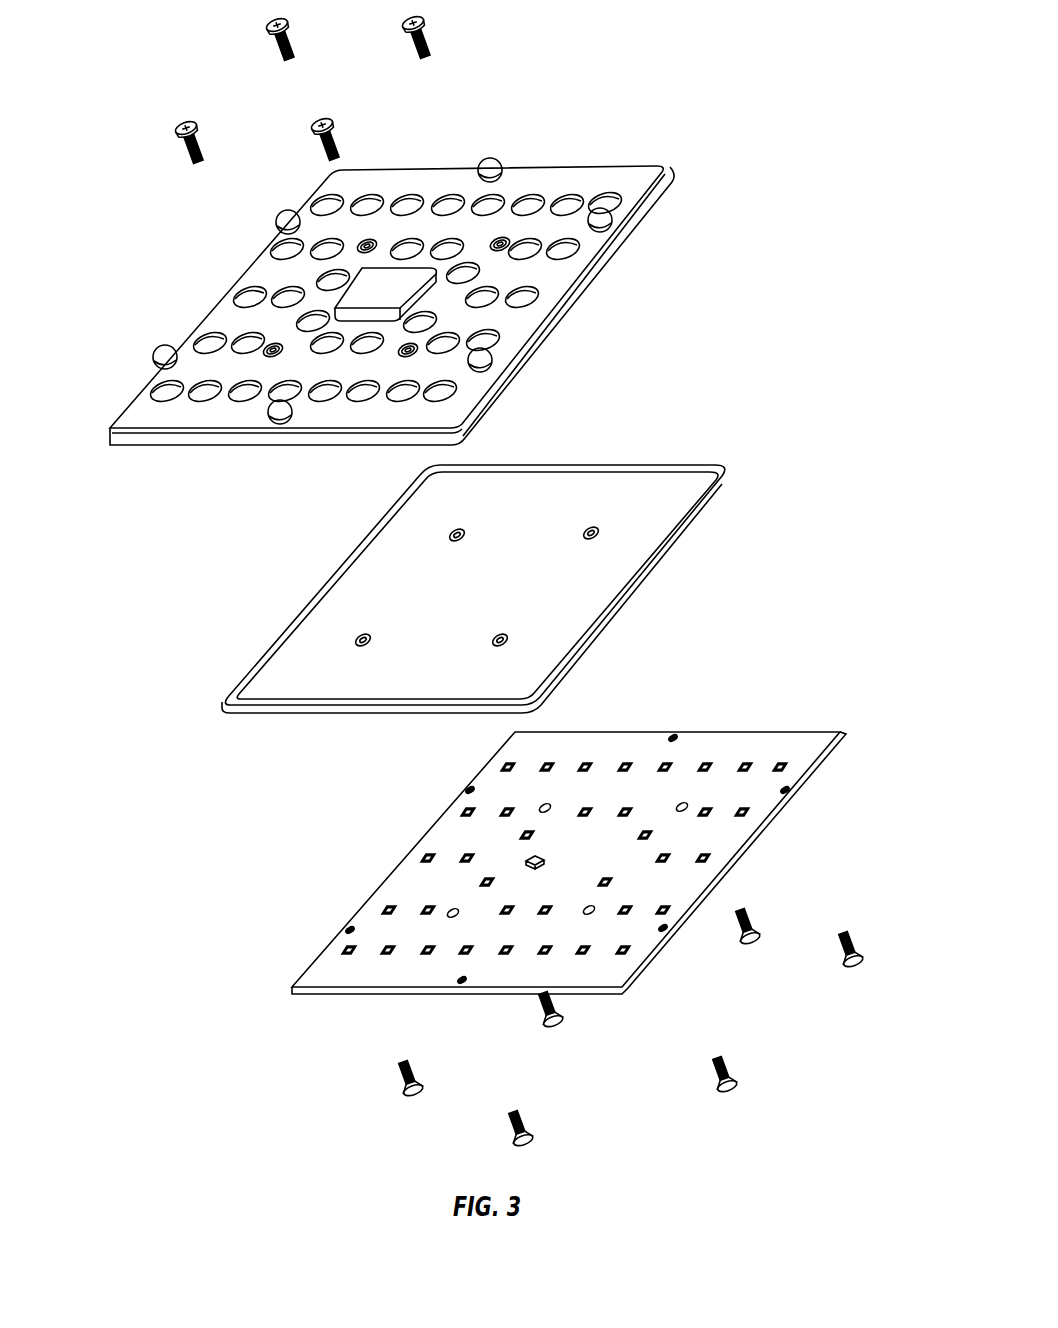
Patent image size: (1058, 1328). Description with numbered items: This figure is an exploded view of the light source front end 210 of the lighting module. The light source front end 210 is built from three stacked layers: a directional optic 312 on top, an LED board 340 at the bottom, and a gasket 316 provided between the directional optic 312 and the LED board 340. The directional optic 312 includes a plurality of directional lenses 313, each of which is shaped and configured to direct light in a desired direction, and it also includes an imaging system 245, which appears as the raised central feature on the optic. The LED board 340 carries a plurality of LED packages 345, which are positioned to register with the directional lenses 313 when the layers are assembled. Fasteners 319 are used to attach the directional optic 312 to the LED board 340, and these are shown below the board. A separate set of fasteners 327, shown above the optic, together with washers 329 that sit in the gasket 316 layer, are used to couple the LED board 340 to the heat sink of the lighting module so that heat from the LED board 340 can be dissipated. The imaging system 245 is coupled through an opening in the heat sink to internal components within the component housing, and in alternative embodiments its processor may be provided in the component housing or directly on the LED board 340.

The light source front end 210 is at (722, 198).
The imaging system 245 is at (376, 283).
The directional optic 312 is at (414, 280).
The directional lenses 313 is at (522, 205).
The gasket 316 is at (482, 562).
The fasteners 319 is at (756, 920).
The fasteners 327 is at (181, 150).
The washers 329 is at (594, 528).
The LED board 340 is at (573, 846).
The LED packages 345 is at (343, 950).